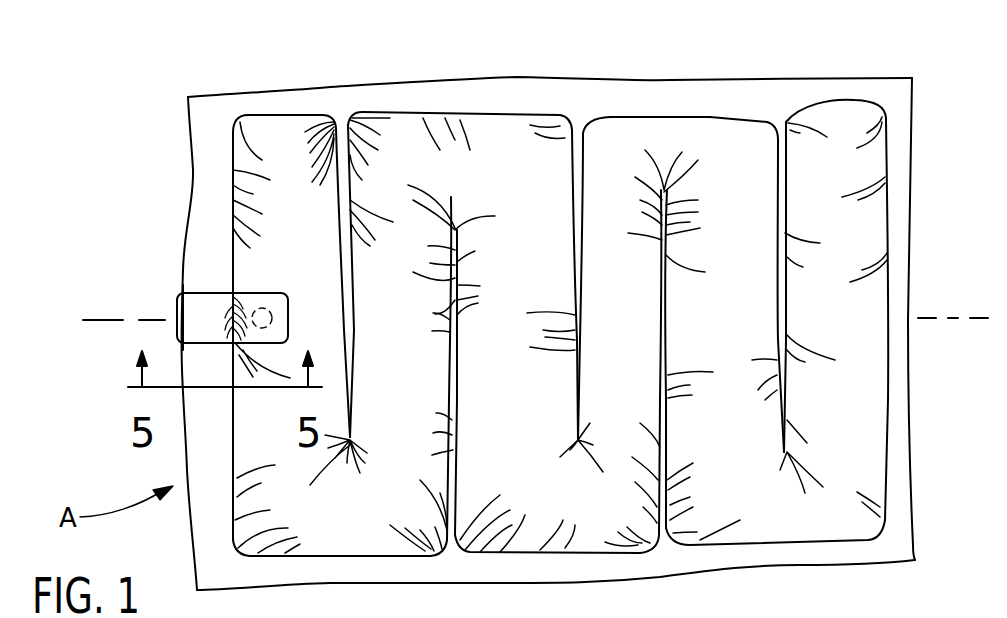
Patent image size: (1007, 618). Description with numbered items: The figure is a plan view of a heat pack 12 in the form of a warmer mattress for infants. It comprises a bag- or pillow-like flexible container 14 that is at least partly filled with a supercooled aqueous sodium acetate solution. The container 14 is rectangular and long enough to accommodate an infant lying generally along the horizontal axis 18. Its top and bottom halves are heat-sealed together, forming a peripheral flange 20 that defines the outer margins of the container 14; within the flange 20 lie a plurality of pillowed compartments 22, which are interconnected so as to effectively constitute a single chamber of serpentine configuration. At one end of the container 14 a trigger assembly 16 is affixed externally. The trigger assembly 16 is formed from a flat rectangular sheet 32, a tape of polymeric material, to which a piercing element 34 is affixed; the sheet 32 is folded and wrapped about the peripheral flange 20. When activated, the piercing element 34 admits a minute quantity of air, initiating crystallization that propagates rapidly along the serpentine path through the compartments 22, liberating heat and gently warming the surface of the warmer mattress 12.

The heat pack 12 is at (915, 560).
The flexible container 14 is at (906, 496).
The trigger assembly 16 is at (209, 283).
The horizontal axis 18 is at (953, 316).
The peripheral flange 20 is at (902, 180).
The pillowed compartments 22 is at (268, 178).
The flat rectangular sheet 32 is at (207, 328).
The piercing element 34 is at (275, 292).